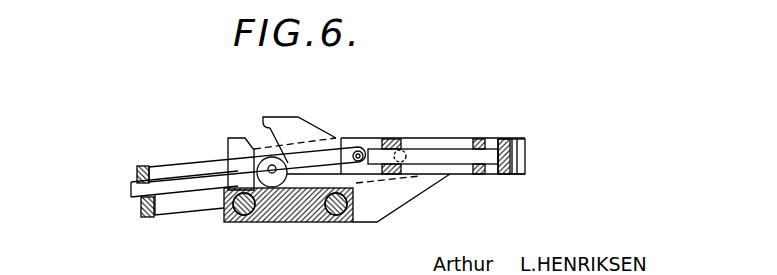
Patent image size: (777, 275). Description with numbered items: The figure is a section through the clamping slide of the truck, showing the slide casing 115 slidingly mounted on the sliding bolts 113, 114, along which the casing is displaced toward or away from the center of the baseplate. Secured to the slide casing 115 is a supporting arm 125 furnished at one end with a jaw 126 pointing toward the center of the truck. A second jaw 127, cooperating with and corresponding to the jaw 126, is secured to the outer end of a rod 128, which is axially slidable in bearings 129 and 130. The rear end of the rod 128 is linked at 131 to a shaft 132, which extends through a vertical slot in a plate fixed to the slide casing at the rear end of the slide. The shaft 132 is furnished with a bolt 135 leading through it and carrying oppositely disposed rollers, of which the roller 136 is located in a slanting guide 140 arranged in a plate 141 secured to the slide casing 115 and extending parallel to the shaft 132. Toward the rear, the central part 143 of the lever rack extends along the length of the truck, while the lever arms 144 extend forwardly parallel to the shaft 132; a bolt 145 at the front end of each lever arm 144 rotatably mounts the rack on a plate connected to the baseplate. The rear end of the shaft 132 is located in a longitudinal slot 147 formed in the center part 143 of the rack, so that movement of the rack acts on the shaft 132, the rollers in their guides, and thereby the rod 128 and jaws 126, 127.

The sliding bolt 113 is at (237, 223).
The sliding bolt 114 is at (338, 223).
The slide casing 115 is at (284, 223).
The supporting arm 125 is at (446, 177).
The jaw 126 is at (520, 137).
The second jaw 127 is at (512, 152).
The rod 128 is at (462, 137).
The bearing 129 is at (480, 174).
The bearing 130 is at (392, 140).
The link 131 is at (360, 150).
The shaft 132 is at (183, 172).
The bolt 135 is at (270, 168).
The roller 136 is at (273, 128).
The guide 140 is at (245, 136).
The plate 141 is at (225, 134).
The central part of lever rack 143 is at (147, 218).
The lever arm 144 is at (190, 211).
The bolt 145 is at (408, 167).
The longitudinal slot 147 is at (137, 168).